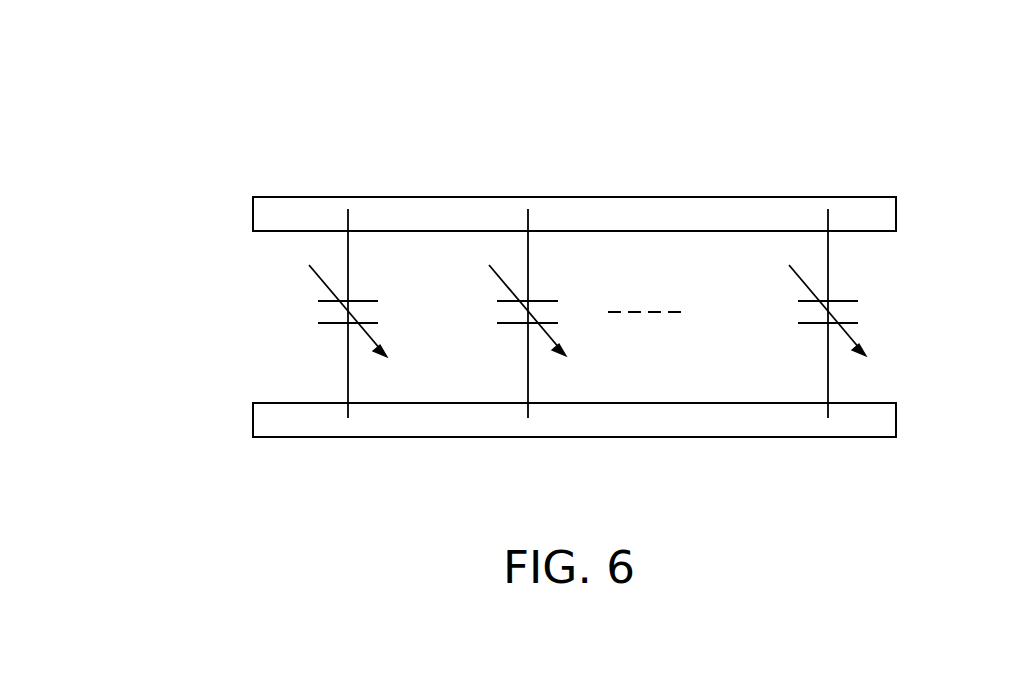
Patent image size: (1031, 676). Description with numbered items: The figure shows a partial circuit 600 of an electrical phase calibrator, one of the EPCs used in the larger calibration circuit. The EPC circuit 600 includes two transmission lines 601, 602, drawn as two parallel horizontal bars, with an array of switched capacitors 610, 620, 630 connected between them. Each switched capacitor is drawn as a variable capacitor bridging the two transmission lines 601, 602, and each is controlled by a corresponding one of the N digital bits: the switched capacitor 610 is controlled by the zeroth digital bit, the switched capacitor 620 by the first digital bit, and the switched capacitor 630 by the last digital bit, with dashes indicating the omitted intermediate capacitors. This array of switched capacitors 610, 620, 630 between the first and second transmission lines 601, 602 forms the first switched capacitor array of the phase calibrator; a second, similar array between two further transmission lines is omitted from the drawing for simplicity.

The partial circuit 600 is at (107, 58).
The transmission line 601 is at (880, 215).
The transmission line 602 is at (880, 422).
The switched capacitor 610 is at (362, 290).
The switched capacitor 620 is at (540, 290).
The switched capacitor 630 is at (842, 290).